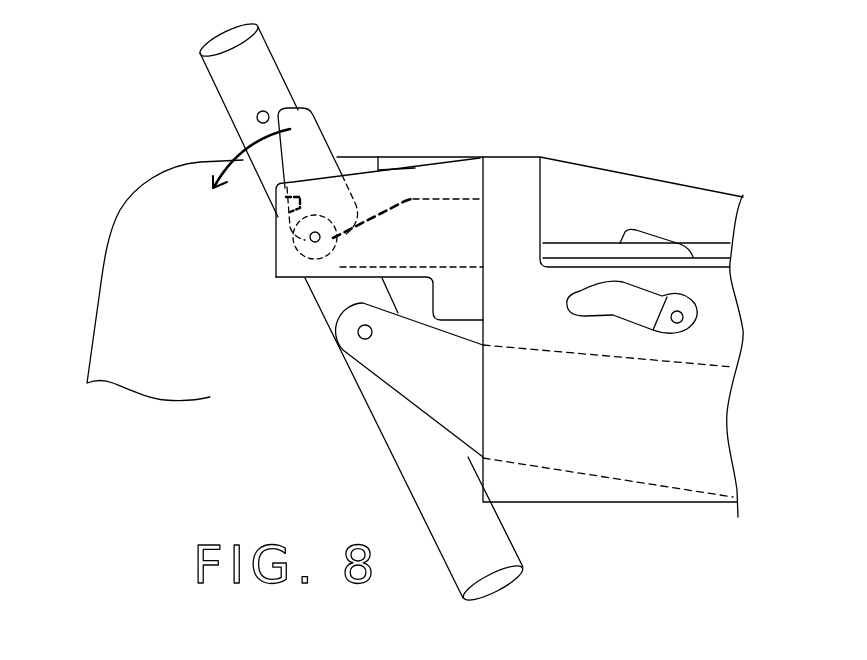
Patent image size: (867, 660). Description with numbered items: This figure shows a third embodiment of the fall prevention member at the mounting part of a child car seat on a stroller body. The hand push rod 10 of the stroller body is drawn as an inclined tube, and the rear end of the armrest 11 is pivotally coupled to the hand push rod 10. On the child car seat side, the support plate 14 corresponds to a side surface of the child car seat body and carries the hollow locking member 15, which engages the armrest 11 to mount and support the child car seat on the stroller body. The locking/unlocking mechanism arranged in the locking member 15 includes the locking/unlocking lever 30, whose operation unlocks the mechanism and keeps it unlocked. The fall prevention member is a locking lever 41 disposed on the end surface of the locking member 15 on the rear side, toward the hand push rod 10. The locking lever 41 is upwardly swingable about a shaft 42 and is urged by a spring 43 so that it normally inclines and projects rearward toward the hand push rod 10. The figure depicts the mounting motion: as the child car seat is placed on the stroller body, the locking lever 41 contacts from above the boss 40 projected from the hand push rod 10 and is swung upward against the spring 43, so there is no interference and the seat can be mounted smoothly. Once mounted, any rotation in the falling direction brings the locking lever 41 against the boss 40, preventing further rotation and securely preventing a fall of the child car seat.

The hand push rod 10 is at (263, 68).
The armrest 11 is at (438, 420).
The support plate 14 is at (140, 225).
The locking member 15 is at (517, 195).
The locking/unlocking lever 30 is at (607, 293).
The boss 40 is at (257, 117).
The locking lever 41 is at (313, 147).
The shaft 42 is at (310, 243).
The spring 43 is at (293, 213).